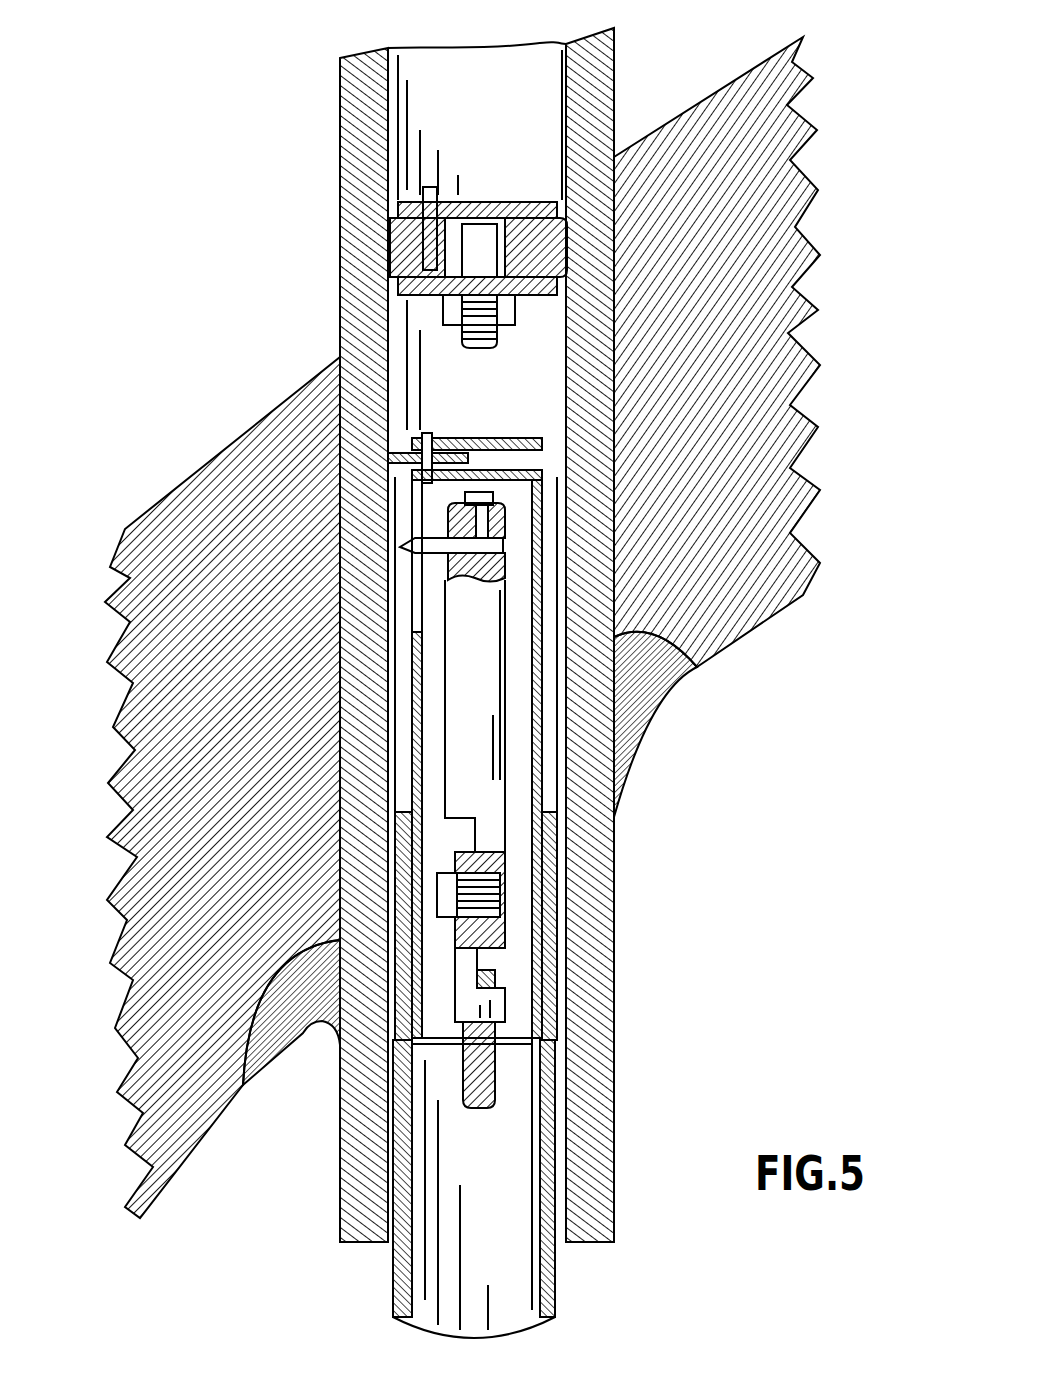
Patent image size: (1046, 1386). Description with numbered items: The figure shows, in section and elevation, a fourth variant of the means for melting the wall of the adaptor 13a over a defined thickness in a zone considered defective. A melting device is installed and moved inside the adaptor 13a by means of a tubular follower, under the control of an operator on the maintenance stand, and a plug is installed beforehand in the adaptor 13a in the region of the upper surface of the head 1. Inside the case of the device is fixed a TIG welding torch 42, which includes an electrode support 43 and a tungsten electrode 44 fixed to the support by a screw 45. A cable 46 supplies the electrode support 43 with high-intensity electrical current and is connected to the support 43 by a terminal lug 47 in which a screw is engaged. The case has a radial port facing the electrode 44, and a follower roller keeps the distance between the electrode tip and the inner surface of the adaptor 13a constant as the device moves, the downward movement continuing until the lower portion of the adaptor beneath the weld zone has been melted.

The head 1 is at (763, 257).
The adaptor 13a is at (615, 85).
The TIG welding torch 42 is at (442, 718).
The electrode support 43 is at (495, 677).
The tungsten electrode 44 is at (416, 532).
The screw 45 is at (480, 493).
The cable 46 is at (480, 1090).
The terminal lug 47 is at (463, 977).